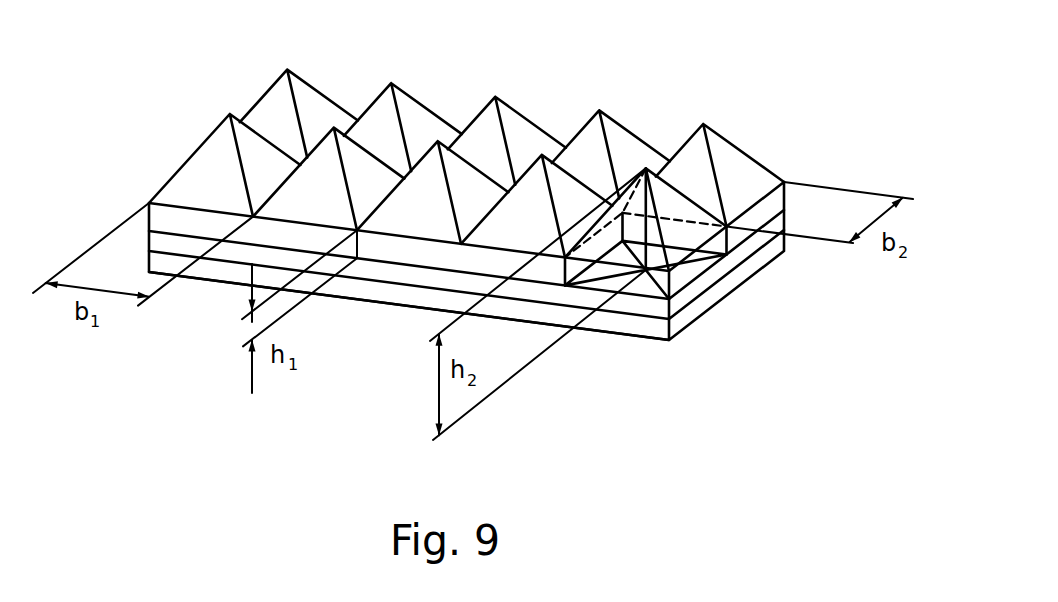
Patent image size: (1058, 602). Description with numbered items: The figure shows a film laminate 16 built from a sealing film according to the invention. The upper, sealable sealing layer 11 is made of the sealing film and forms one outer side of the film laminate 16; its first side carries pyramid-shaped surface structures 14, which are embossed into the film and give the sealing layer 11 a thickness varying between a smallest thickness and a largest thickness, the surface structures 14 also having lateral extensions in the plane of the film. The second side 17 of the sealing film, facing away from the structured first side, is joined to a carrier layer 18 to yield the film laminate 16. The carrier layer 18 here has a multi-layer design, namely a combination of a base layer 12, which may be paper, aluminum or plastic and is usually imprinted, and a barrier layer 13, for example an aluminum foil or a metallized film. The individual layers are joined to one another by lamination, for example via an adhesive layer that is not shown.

The sealing layer 11 is at (215, 176).
The base layer 12 is at (777, 248).
The barrier layer 13 is at (735, 258).
The surface structures 14 is at (457, 187).
The film laminate 16 is at (350, 370).
The second side 17 is at (239, 244).
The carrier layer 18 is at (677, 300).